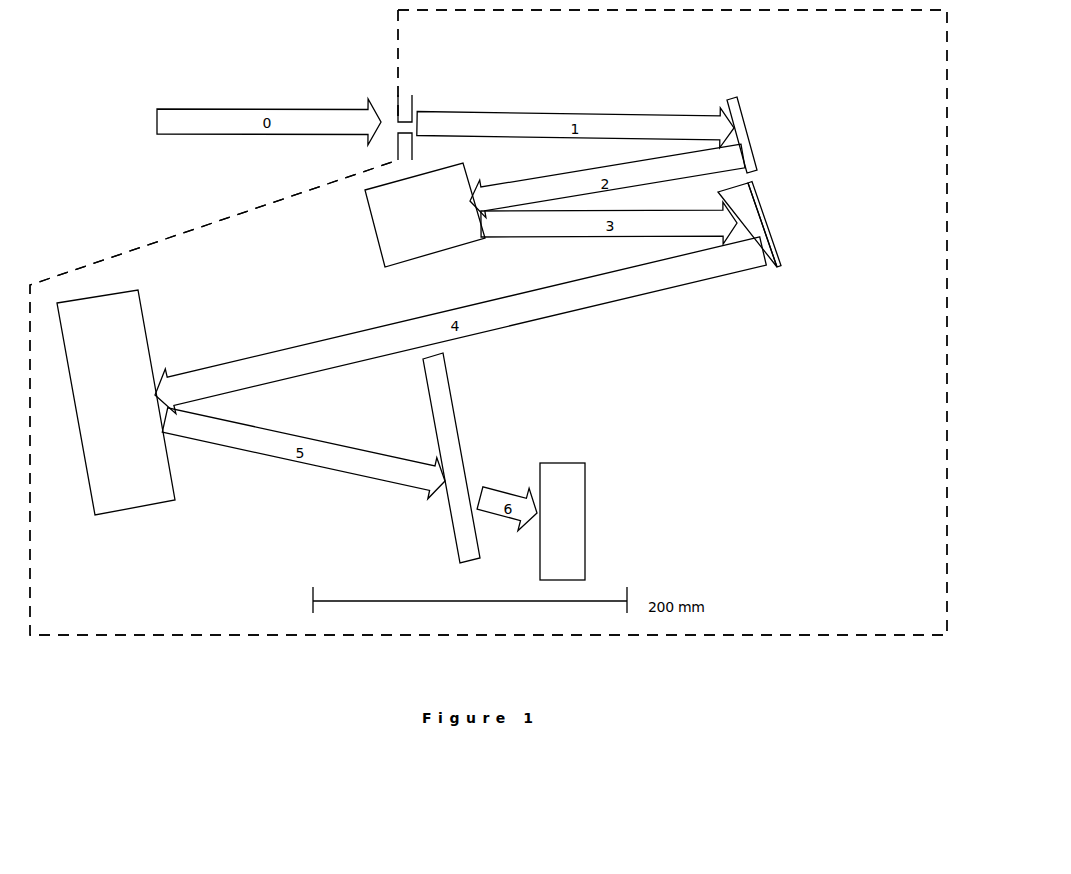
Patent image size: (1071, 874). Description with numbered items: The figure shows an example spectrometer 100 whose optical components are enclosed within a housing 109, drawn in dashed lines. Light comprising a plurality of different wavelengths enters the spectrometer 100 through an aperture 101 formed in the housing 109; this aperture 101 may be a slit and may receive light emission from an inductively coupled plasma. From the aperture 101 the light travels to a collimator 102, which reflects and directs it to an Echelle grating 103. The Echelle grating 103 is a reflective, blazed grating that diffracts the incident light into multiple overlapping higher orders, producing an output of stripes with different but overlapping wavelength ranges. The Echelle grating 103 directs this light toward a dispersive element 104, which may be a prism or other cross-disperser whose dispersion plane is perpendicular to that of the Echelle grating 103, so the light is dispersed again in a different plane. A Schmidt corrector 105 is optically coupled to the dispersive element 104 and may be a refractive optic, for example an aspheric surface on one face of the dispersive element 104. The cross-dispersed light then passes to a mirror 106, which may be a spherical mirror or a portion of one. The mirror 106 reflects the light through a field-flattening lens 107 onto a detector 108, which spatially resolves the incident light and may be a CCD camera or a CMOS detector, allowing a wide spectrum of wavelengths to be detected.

The spectrometer 100 is at (165, 63).
The aperture 101 is at (403, 123).
The collimator 102 is at (745, 135).
The Echelle grating 103 is at (373, 228).
The dispersive element 104 is at (760, 248).
The Schmidt corrector 105 is at (764, 199).
The mirror 106 is at (133, 505).
The field-flattening lens 107 is at (455, 428).
The detector 108 is at (587, 507).
The housing 109 is at (178, 232).